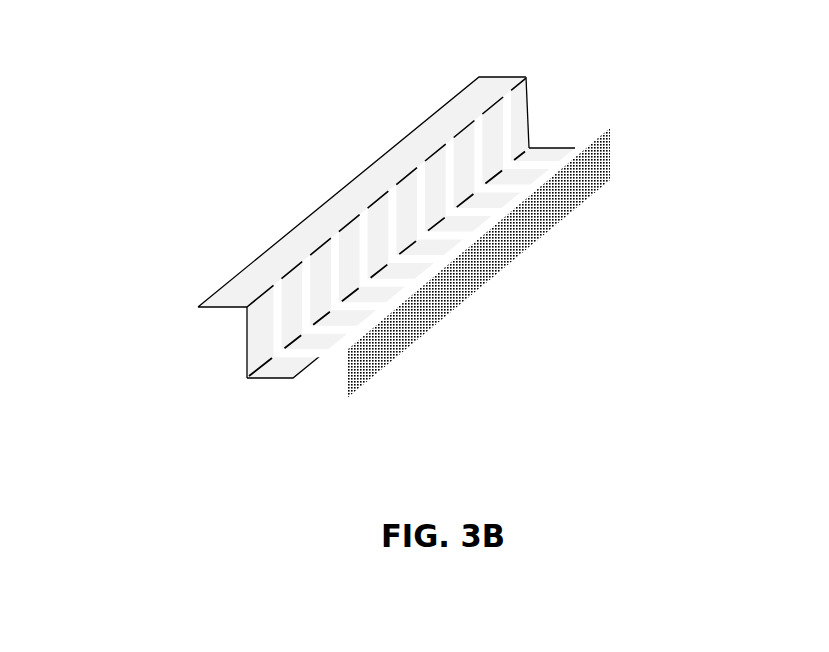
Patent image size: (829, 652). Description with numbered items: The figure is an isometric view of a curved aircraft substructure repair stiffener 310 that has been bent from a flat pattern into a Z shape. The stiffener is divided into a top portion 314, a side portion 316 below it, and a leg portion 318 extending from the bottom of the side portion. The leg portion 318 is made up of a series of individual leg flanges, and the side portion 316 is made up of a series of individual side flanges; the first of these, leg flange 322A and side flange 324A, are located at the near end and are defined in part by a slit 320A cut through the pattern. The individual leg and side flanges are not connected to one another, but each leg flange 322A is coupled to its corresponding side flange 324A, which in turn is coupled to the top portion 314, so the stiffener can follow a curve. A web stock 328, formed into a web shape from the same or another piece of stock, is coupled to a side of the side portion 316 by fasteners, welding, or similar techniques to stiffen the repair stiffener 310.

The curved aircraft substructure repair stiffener 310 is at (365, 249).
The top portion 314 is at (505, 76).
The side portion 316 is at (530, 116).
The leg portion 318 is at (548, 146).
The slit 320A is at (320, 360).
The leg flange 322A is at (279, 375).
The side flange 324A is at (240, 338).
The web stock 328 is at (515, 254).